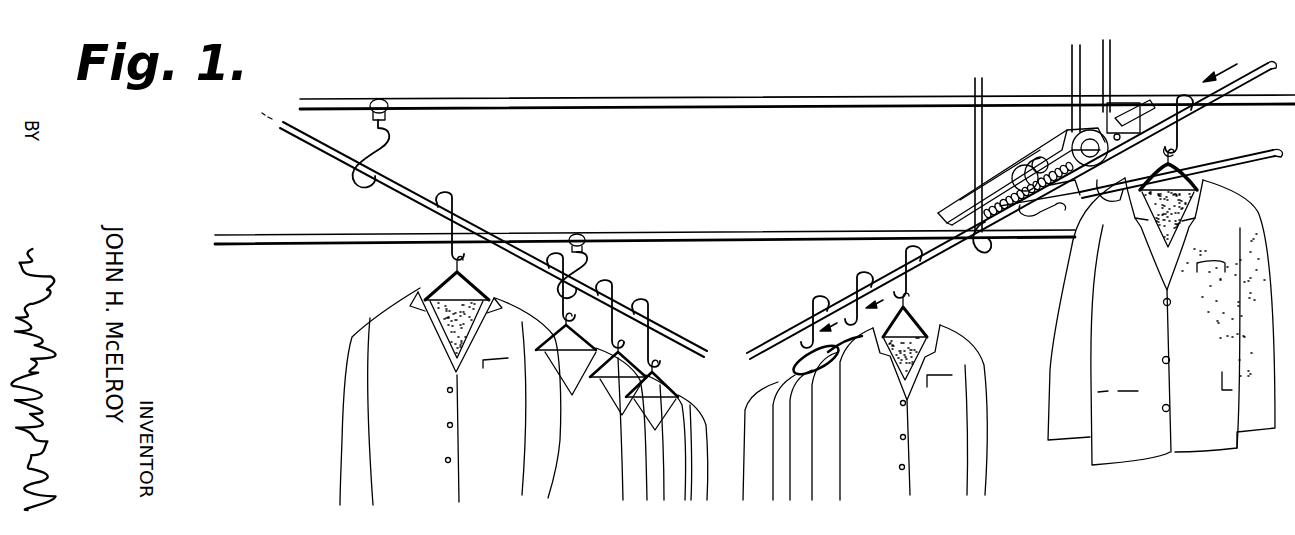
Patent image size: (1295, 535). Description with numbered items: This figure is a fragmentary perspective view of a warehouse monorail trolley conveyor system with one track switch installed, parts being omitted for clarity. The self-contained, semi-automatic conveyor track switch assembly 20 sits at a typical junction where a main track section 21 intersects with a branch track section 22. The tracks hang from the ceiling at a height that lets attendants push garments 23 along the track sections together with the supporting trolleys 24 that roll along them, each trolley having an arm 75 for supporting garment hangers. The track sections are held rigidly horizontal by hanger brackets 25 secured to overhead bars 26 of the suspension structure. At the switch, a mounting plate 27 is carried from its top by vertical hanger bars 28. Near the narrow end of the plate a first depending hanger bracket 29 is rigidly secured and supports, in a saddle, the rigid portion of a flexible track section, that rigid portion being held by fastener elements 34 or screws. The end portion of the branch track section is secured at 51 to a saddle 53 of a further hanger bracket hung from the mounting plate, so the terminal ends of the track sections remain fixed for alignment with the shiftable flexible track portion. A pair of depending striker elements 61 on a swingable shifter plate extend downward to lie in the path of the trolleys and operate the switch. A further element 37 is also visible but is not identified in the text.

The conveyor track switch assembly 20 is at (1022, 155).
The main track section 21 is at (476, 224).
The branch track section 22 is at (1244, 163).
The garments 23 is at (372, 320).
The trolleys 24 is at (452, 196).
The hanger brackets 25 is at (378, 150).
The overhead bars 26 is at (681, 110).
The mounting plate 27 is at (990, 196).
The vertical hanger bars 28 is at (1100, 67).
The first depending hanger bracket 29 is at (980, 246).
The saddle 53 is at (1128, 120).
The striker elements 61 is at (1172, 144).
The arm 75 is at (446, 251).
The fastener elements 34 is at (126, 11).
The element 37 is at (571, 7).
The securing point of branch track section end 51 is at (673, 11).